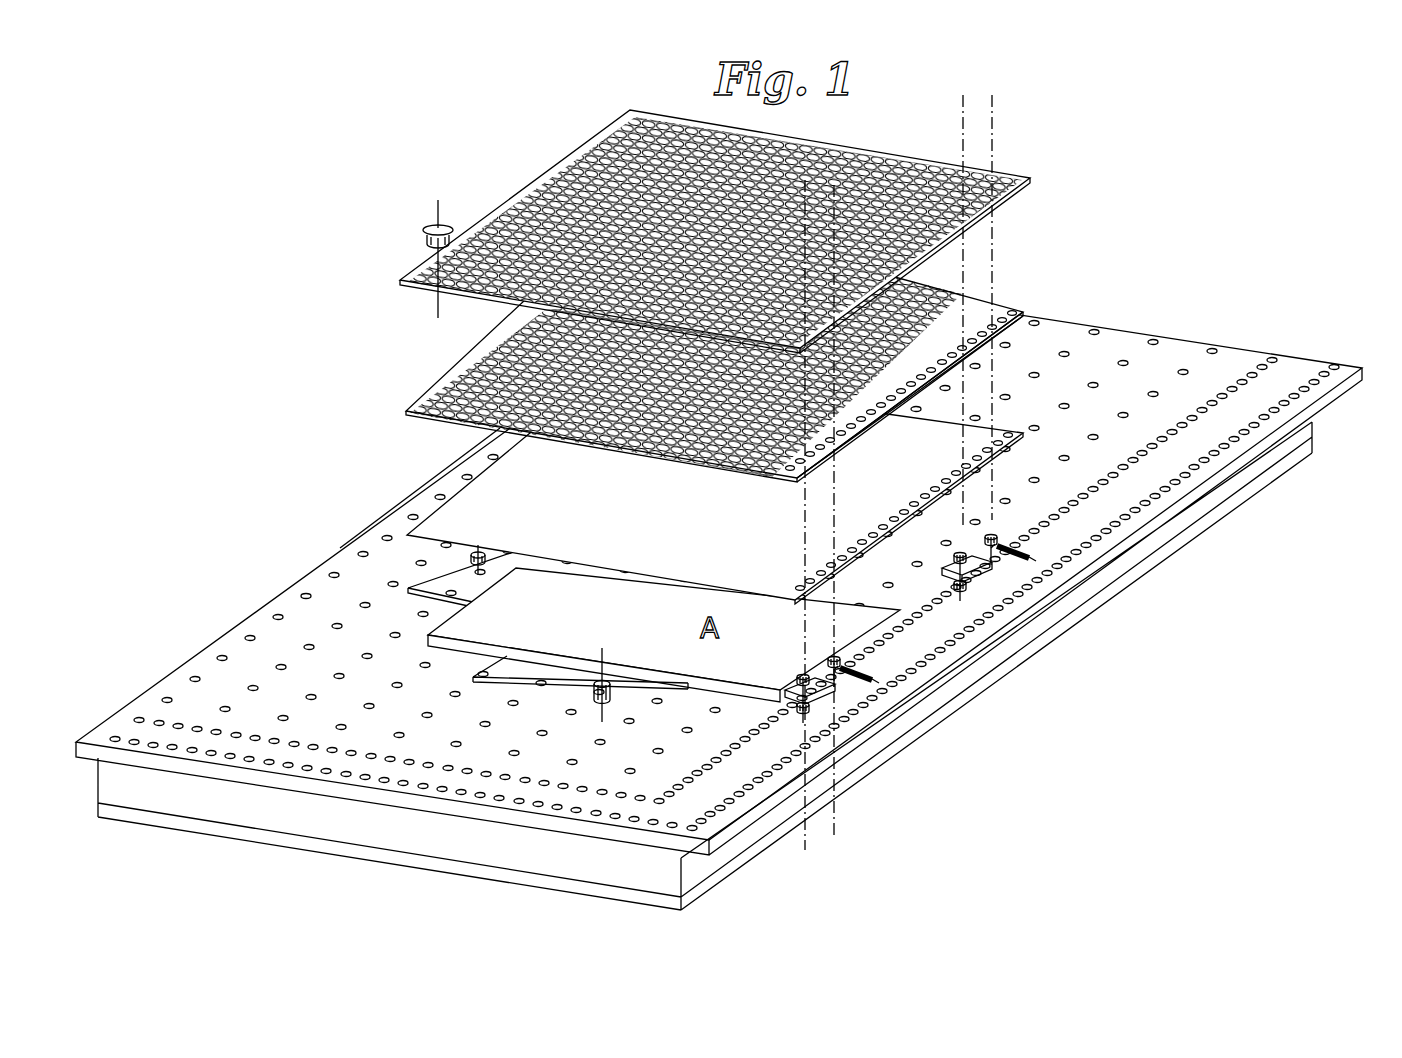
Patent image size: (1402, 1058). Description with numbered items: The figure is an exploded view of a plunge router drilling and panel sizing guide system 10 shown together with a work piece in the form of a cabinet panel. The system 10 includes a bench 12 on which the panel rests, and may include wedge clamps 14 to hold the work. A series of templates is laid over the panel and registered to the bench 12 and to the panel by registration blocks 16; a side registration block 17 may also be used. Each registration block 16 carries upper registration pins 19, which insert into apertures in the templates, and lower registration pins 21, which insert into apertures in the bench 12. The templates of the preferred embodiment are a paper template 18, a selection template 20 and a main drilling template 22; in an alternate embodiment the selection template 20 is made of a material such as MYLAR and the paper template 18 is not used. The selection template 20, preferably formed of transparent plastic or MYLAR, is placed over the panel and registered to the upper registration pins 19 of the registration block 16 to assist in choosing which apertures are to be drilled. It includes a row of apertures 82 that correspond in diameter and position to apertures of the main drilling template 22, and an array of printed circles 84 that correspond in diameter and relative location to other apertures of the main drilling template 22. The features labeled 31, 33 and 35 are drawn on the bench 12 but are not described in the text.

The plunge router drilling and panel sizing guide system 10 is at (290, 405).
The bench 12 is at (220, 633).
The wedge clamps 14 is at (411, 587).
The registration blocks 16 is at (822, 690).
The side registration block 17 is at (437, 225).
The paper template 18 is at (987, 413).
The upper registration pins 19 is at (803, 727).
The selection template 20 is at (948, 294).
The lower registration pins 21 is at (820, 696).
The main drilling template 22 is at (868, 144).
The hole 31 is at (157, 716).
The edge hole 33 is at (343, 775).
The locating hole 35 is at (302, 591).
The row of apertures 82 is at (1020, 305).
The array of circles 84 is at (463, 366).